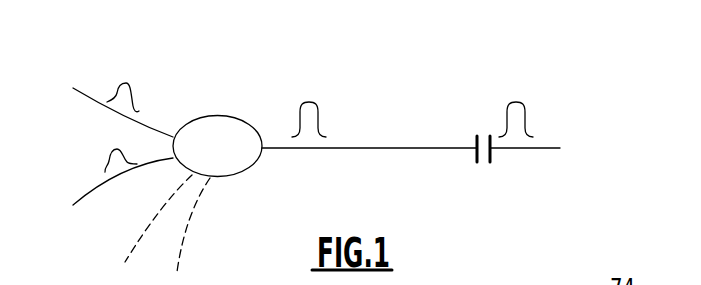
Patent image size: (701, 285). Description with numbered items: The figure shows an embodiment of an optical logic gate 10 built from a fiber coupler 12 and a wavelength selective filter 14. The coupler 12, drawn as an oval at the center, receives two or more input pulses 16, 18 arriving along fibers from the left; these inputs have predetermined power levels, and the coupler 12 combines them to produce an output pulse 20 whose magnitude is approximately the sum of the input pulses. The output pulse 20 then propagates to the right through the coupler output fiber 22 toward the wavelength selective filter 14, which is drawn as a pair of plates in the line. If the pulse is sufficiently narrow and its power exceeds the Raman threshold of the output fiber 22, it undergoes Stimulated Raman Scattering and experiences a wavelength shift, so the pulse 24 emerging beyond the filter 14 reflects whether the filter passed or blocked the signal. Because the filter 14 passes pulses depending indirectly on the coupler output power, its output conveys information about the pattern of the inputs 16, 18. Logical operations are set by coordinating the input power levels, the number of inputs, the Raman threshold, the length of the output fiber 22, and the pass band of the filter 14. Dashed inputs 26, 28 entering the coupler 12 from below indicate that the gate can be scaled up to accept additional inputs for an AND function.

The logic gate 10 is at (263, 51).
The fiber coupler 12 is at (252, 165).
The wavelength selective filter 14 is at (476, 157).
The input pulse 16 is at (151, 76).
The input pulse 18 is at (93, 142).
The output pulse 20 is at (343, 103).
The coupler output fiber 22 is at (403, 148).
The coupled output pulse 24 is at (540, 106).
The dashed input 26 is at (132, 245).
The dashed input 28 is at (185, 232).